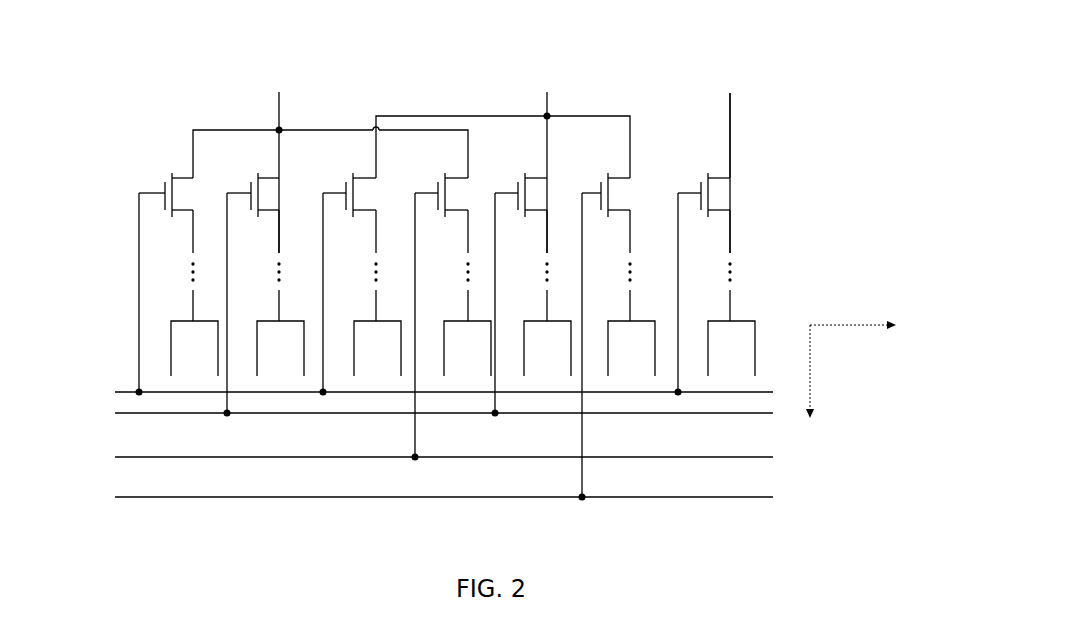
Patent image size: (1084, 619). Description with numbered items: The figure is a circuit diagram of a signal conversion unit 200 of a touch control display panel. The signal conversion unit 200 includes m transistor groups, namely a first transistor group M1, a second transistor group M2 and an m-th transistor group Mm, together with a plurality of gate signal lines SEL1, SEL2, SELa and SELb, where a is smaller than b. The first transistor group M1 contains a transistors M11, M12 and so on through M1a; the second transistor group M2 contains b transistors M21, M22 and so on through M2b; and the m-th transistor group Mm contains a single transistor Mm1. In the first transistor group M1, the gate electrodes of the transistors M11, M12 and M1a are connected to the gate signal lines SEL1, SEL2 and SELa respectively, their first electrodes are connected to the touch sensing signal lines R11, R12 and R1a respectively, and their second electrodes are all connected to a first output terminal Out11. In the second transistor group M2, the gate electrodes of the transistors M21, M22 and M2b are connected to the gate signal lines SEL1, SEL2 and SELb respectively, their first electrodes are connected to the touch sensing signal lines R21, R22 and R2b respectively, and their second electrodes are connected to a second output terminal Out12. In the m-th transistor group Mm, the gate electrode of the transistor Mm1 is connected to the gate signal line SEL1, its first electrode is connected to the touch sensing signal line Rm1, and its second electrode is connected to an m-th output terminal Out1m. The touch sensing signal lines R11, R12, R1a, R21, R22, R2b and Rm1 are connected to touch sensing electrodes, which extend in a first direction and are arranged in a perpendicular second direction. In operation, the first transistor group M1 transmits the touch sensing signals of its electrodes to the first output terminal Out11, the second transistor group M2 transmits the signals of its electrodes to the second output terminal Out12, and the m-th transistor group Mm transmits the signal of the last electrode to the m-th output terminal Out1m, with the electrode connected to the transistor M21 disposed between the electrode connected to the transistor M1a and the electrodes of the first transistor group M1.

The signal conversion unit 200 is at (797, 33).
The first output terminal Out11 is at (279, 162).
The second output terminal Out12 is at (546, 162).
The m-th output terminal Out1m is at (729, 162).
The first transistor group M1 is at (158, 157).
The second transistor group M2 is at (333, 153).
The m-th transistor group Mm is at (676, 150).
The transistor M11 is at (166, 276).
The transistor M12 is at (253, 286).
The transistor M21 is at (349, 276).
The transistor M1a is at (441, 308).
The transistor M22 is at (521, 286).
The transistor M2b is at (606, 327).
The transistor Mm1 is at (704, 274).
The touch sensing signal line R11 is at (192, 293).
The touch sensing signal line R12 is at (278, 293).
The touch sensing signal line R21 is at (375, 293).
The touch sensing signal line R1a is at (466, 293).
The touch sensing signal line R22 is at (545, 293).
The touch sensing signal line R2b is at (629, 293).
The touch sensing signal line Rm1 is at (727, 293).
The gate signal line SEL1 is at (419, 393).
The gate signal line SEL2 is at (419, 413).
The gate signal line SELa is at (419, 457).
The gate signal line SELb is at (419, 497).